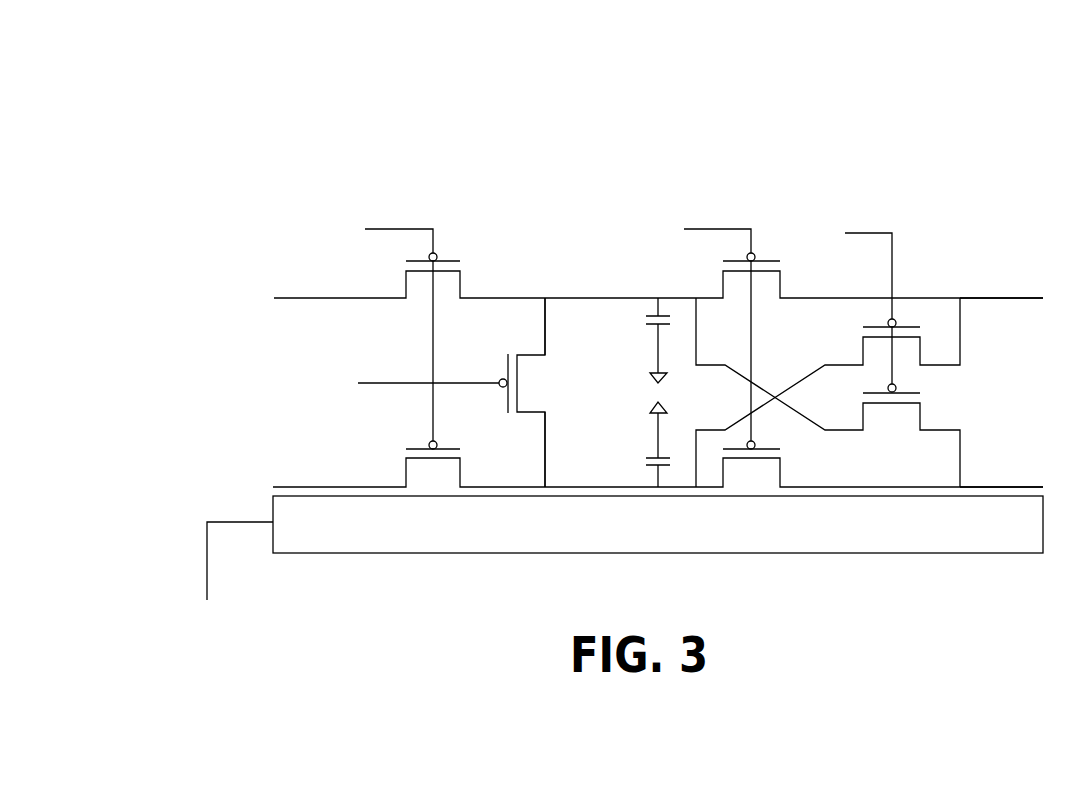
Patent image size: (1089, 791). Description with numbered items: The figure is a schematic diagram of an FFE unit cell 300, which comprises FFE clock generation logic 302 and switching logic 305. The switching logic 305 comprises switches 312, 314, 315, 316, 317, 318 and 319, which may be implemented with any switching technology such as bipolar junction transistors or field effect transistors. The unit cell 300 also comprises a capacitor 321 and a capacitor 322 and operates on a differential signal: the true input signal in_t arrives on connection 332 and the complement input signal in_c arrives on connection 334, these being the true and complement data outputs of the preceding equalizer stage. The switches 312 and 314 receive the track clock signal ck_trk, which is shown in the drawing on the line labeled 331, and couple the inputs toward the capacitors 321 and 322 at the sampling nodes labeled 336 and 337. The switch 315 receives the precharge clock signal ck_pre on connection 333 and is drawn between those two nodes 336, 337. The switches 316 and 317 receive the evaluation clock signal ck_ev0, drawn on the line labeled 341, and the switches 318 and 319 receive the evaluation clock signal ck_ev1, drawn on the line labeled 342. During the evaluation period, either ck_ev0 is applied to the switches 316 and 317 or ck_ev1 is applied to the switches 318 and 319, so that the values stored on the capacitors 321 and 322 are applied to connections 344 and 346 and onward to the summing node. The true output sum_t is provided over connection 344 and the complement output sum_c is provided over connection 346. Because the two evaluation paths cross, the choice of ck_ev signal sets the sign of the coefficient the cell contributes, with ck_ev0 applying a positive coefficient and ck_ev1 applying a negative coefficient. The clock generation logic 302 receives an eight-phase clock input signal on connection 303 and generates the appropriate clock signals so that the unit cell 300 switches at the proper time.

The FFE unit cell 300 is at (569, 342).
The FFE clock generation logic 302 is at (323, 547).
The connection 303 is at (205, 558).
The switching logic 305 is at (657, 317).
The switch 312 is at (482, 248).
The switch 314 is at (467, 432).
The switch 315 is at (572, 374).
The switch 316 is at (804, 263).
The switch 317 is at (805, 460).
The switch 318 is at (837, 325).
The switch 319 is at (948, 404).
The capacitor 321 is at (650, 322).
The capacitor 322 is at (646, 458).
The ck_trk clock signal 331 is at (402, 229).
The connection 332 is at (301, 299).
The connection 333 is at (412, 383).
The connection 334 is at (372, 487).
The in_t sampling node 336 is at (604, 298).
The in_c sampling node 337 is at (582, 487).
The ck_ev0 clock signal 341 is at (742, 229).
The ck_ev1 clock signal 342 is at (878, 233).
The connection 344 is at (997, 298).
The connection 346 is at (980, 487).